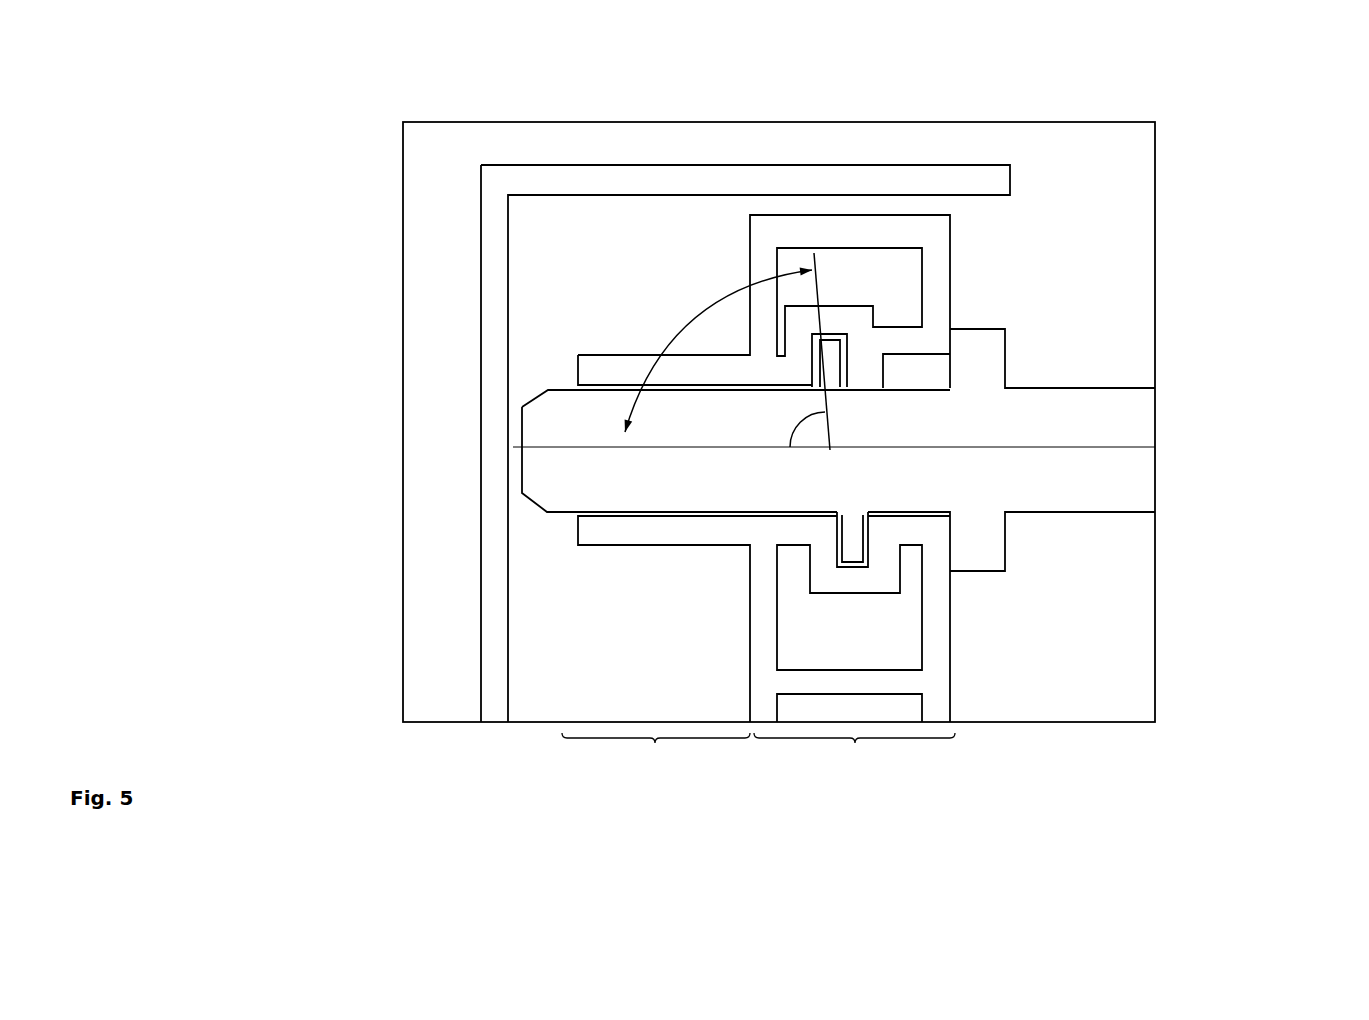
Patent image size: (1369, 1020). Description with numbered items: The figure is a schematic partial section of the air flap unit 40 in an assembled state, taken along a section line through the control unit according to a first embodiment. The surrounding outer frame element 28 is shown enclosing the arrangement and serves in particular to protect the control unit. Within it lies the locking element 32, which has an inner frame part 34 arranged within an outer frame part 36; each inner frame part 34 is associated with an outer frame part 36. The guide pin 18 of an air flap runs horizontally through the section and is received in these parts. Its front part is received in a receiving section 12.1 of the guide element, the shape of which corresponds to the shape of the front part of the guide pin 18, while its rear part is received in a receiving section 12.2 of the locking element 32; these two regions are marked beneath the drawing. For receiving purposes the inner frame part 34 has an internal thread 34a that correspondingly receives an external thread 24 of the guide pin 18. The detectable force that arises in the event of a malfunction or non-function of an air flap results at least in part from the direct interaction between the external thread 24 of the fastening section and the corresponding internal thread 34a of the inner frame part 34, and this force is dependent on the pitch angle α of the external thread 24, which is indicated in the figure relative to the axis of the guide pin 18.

The outer frame element 28 is at (522, 132).
The locking element 32 is at (729, 133).
The outer frame part 36 is at (838, 178).
The inner frame part 34 is at (940, 255).
The external thread 24 is at (835, 370).
The guide pin 18 is at (548, 498).
The internal thread 34a is at (863, 535).
The air flap unit 40 is at (1240, 714).
The receiving section 12.1 is at (656, 765).
The receiving section 12.2 is at (854, 765).